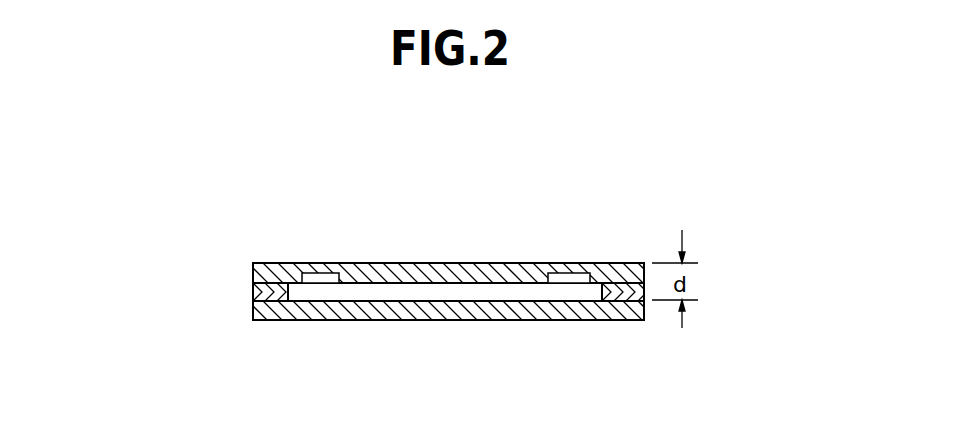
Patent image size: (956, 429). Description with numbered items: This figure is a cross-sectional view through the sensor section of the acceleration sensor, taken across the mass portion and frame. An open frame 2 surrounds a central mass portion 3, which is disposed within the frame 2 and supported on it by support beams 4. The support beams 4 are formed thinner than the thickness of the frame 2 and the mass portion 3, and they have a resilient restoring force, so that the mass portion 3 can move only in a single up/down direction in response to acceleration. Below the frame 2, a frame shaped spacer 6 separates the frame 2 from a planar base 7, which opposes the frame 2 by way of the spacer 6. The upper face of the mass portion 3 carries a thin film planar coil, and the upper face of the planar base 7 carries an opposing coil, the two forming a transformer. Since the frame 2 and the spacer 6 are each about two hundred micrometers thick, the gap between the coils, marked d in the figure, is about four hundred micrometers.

The open frame 2 is at (253, 277).
The mass portion 3 is at (465, 266).
The support beams 4 is at (320, 270).
The frame shaped spacer 6 is at (253, 298).
The planar base 7 is at (430, 321).